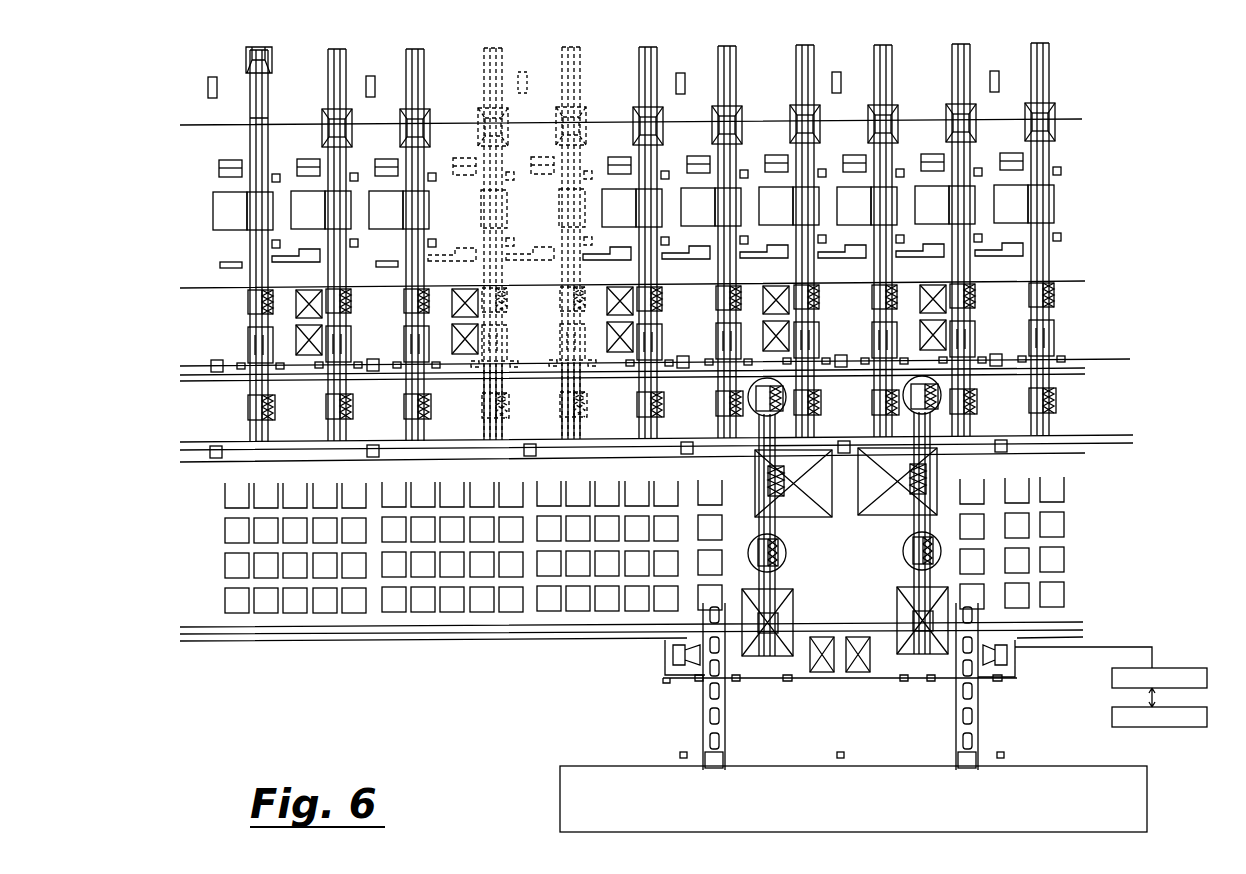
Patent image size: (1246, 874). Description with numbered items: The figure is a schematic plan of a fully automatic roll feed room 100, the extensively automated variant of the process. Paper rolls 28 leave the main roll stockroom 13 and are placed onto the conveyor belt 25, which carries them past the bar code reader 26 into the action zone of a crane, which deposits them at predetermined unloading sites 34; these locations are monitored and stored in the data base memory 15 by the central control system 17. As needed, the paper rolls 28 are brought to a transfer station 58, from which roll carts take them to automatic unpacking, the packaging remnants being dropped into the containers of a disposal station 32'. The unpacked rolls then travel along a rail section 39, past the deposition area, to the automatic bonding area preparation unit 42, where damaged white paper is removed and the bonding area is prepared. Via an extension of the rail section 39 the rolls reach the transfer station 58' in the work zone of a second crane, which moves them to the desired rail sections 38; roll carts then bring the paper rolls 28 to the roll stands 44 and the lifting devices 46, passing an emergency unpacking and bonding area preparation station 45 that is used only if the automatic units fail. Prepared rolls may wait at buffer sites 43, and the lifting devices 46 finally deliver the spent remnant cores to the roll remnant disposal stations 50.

The fully automatic roll feed room 100 is at (176, 212).
The roll remnant disposal station 50 is at (1053, 108).
The roll stand 44 is at (1047, 182).
The lifting device 46 is at (1043, 203).
The buffer site 43 is at (1050, 280).
The emergency unpacking and bonding area preparation station 45 is at (1058, 335).
The transfer station 58' is at (1060, 382).
The rail section 38 is at (1060, 407).
The automatic bonding area preparation unit 42 is at (890, 460).
The unloading site 34 is at (1050, 480).
The paper roll 28 is at (1047, 562).
The transfer station 58 is at (1035, 620).
The rail section 39 is at (818, 641).
The disposal station 32' is at (889, 687).
The bar code reader 26 is at (1018, 660).
The conveyor belt 25 is at (979, 697).
The central control system 17 is at (1198, 668).
The data base memory 15 is at (1180, 727).
The main roll stockroom 13 is at (1123, 800).